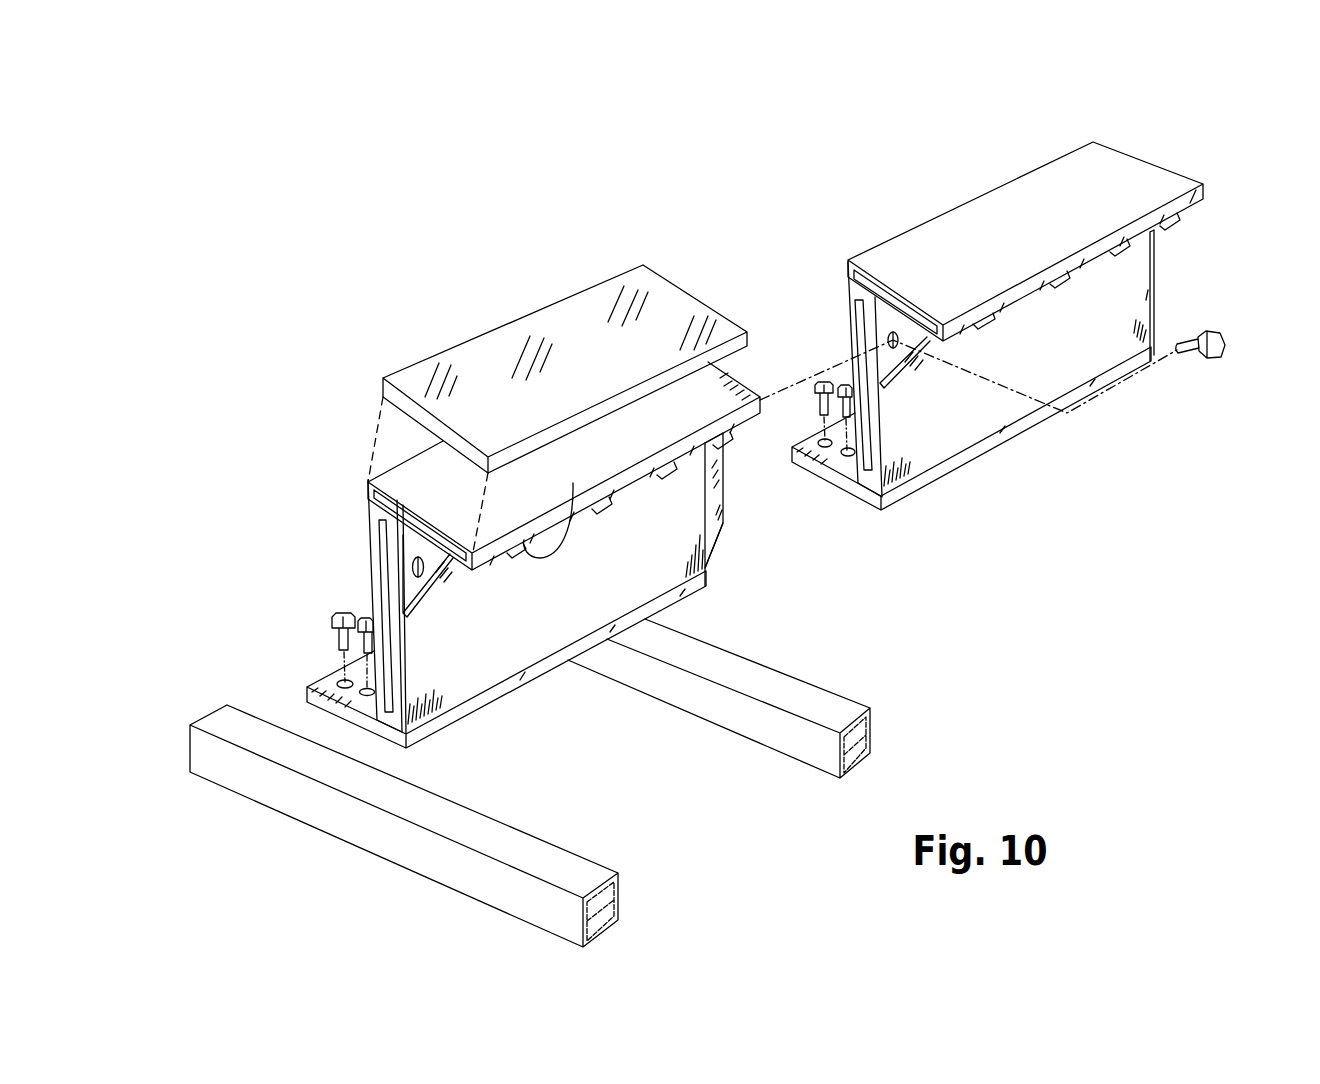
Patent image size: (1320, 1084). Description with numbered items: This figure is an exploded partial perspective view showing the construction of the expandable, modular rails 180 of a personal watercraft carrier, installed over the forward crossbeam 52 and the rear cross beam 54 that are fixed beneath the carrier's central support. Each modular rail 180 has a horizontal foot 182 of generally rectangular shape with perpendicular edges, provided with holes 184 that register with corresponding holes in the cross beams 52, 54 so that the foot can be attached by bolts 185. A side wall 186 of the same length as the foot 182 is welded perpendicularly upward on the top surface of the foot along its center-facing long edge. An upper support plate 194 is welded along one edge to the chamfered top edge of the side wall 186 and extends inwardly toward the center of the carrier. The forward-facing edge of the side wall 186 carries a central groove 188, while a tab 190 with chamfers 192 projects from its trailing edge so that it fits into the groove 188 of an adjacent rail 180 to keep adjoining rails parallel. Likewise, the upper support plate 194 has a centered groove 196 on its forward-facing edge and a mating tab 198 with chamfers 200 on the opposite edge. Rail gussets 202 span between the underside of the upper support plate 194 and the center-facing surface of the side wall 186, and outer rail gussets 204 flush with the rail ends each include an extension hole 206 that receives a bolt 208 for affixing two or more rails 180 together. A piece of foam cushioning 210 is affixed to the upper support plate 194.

The forward crossbeam 52 is at (462, 897).
The rear cross beam 54 is at (797, 750).
The modular rail 180 is at (350, 564).
The horizontal foot 182 is at (322, 702).
The holes 184 is at (349, 688).
The bolts 185 is at (360, 620).
The side wall 186 is at (443, 675).
The central groove 188 is at (413, 640).
The tab 190 is at (723, 523).
The chamfers 192 is at (705, 568).
The upper support plate 194 is at (725, 433).
The groove 196 is at (413, 565).
The mating tab 198 is at (717, 373).
The chamfers 200 is at (743, 387).
The rail gussets 202 is at (573, 483).
The outer rail gusset 204 is at (412, 540).
The extension hole 206 is at (368, 494).
The bolt 208 is at (1193, 362).
The foam cushioning 210 is at (479, 370).